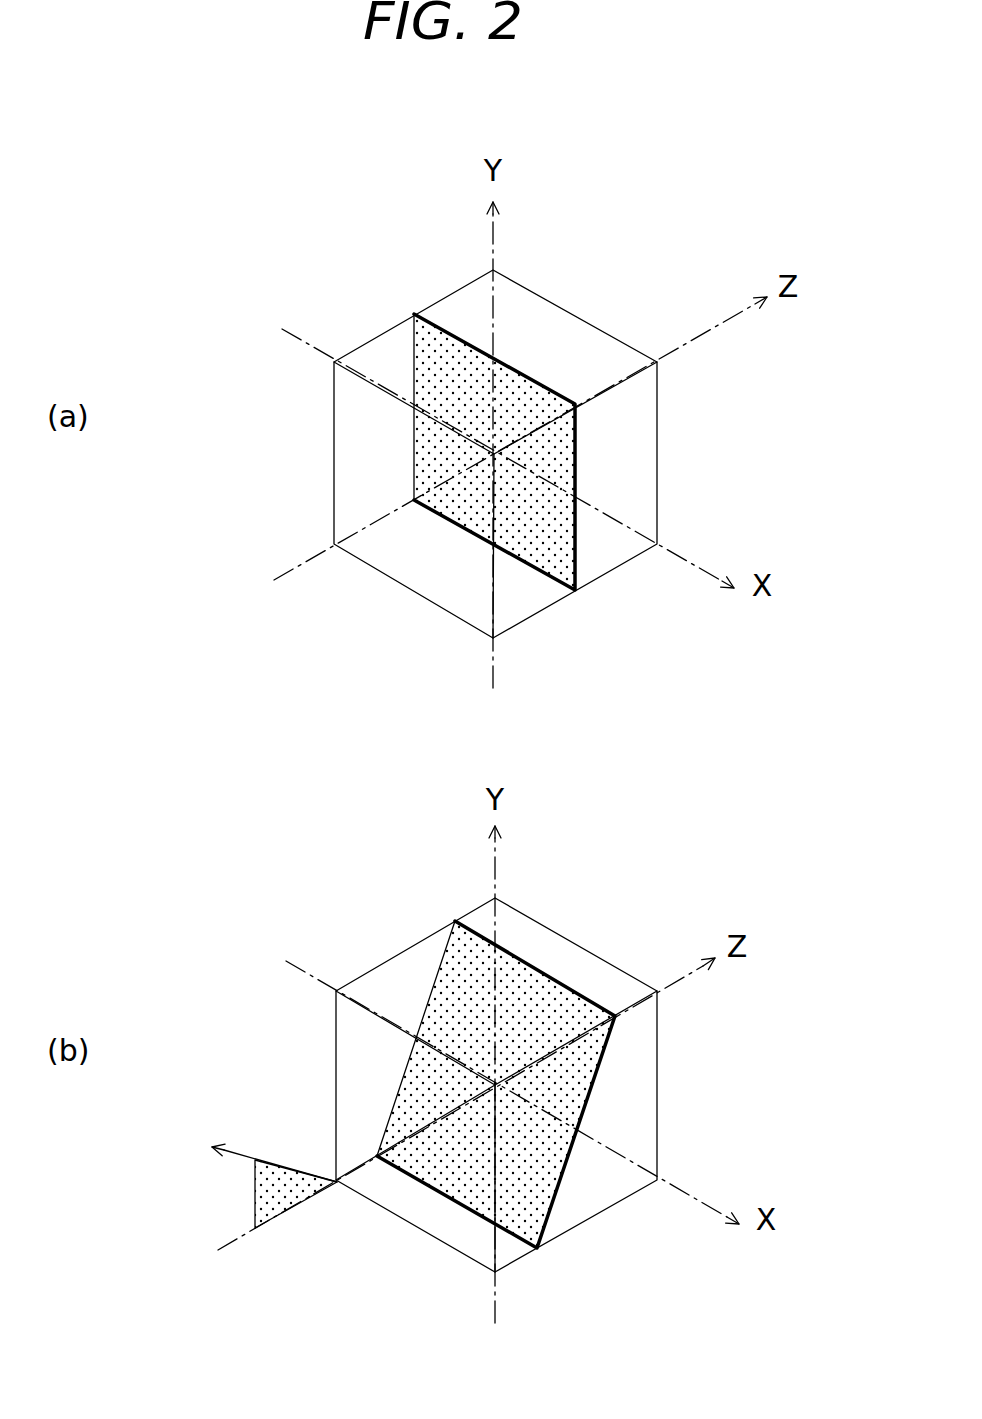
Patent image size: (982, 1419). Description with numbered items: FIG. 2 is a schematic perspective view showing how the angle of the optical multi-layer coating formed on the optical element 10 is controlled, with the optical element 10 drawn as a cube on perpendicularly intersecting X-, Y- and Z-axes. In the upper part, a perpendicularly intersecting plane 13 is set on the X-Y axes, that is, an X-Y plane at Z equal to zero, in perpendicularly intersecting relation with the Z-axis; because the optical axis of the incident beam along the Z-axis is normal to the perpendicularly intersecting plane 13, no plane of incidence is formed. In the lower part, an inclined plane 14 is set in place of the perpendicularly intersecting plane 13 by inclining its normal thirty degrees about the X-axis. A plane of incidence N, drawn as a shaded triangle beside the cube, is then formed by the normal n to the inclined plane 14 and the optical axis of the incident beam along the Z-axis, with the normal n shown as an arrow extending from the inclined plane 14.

The optical element 10 is at (581, 316).
The perpendicularly intersecting plane 13 is at (547, 562).
The inclined plane 14 is at (551, 997).
The plane of incidence N is at (253, 1197).
The normal n is at (262, 1155).